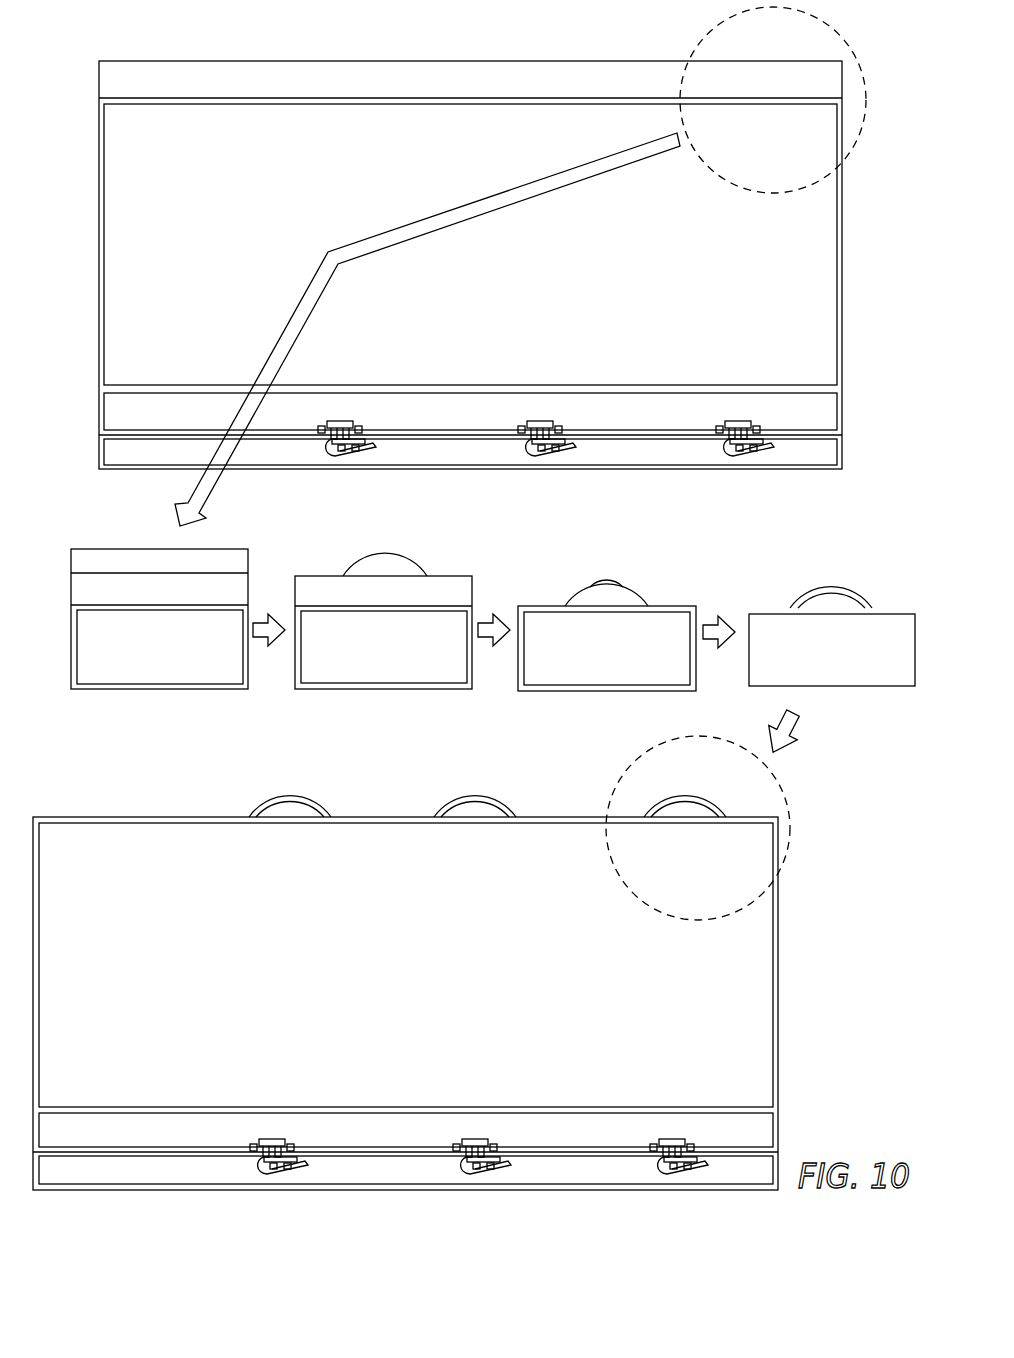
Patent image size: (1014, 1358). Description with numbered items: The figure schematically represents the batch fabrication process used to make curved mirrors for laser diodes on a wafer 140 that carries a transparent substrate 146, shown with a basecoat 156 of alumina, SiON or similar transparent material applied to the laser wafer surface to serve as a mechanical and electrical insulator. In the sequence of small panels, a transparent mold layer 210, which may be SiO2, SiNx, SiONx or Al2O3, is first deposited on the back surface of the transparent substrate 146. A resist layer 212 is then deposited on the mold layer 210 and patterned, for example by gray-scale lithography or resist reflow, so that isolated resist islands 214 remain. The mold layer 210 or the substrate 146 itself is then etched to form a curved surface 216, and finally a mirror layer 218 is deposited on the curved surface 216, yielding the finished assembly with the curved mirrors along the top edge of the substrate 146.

The wafer 140 is at (822, 413).
The transparent substrate 146 is at (823, 237).
The basecoat 156 is at (823, 453).
The transparent mold layer 210 is at (718, 80).
The resist layer 212 is at (75, 566).
The resist islands 214 is at (400, 566).
The curved surface 216 is at (583, 600).
The mirror layer 218 is at (834, 590).